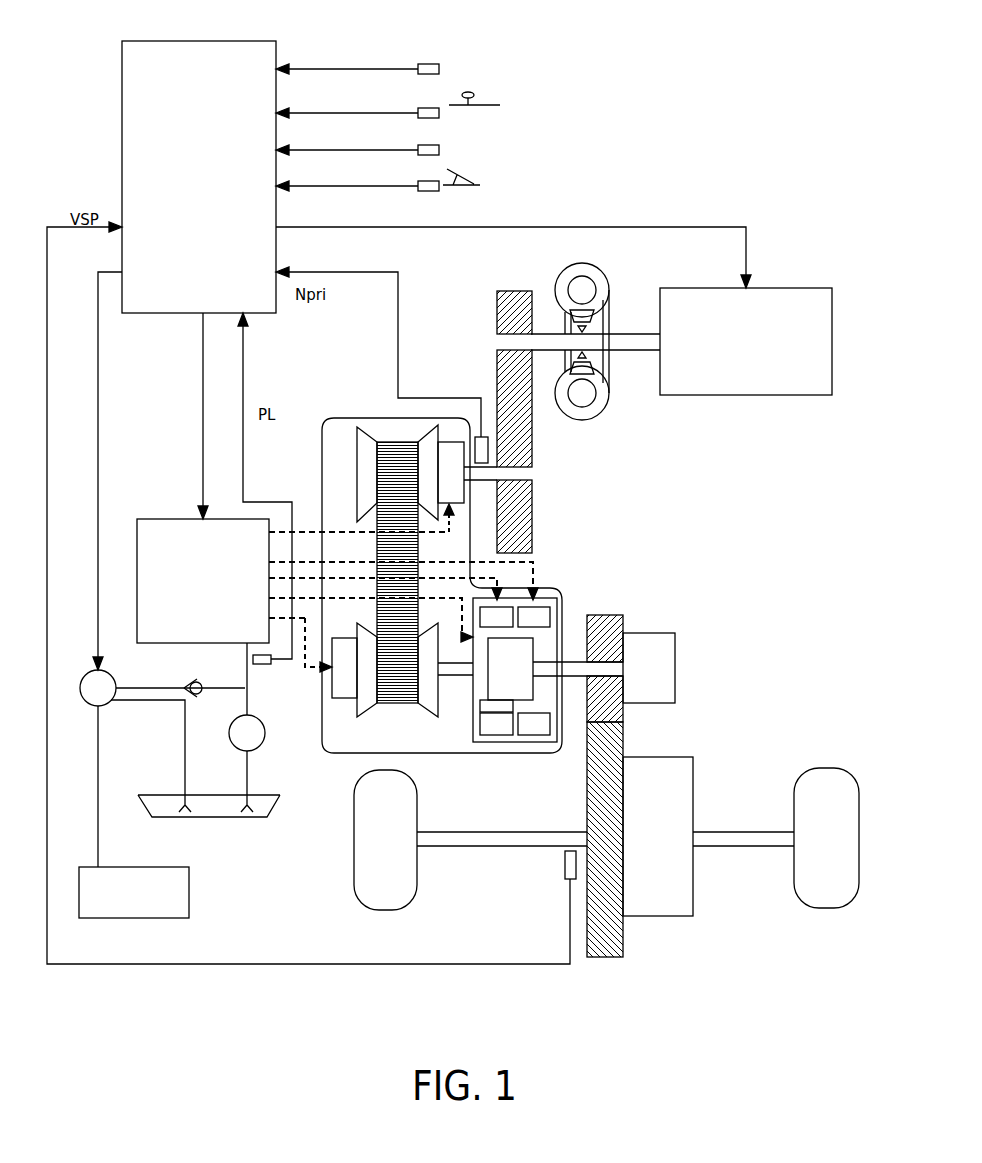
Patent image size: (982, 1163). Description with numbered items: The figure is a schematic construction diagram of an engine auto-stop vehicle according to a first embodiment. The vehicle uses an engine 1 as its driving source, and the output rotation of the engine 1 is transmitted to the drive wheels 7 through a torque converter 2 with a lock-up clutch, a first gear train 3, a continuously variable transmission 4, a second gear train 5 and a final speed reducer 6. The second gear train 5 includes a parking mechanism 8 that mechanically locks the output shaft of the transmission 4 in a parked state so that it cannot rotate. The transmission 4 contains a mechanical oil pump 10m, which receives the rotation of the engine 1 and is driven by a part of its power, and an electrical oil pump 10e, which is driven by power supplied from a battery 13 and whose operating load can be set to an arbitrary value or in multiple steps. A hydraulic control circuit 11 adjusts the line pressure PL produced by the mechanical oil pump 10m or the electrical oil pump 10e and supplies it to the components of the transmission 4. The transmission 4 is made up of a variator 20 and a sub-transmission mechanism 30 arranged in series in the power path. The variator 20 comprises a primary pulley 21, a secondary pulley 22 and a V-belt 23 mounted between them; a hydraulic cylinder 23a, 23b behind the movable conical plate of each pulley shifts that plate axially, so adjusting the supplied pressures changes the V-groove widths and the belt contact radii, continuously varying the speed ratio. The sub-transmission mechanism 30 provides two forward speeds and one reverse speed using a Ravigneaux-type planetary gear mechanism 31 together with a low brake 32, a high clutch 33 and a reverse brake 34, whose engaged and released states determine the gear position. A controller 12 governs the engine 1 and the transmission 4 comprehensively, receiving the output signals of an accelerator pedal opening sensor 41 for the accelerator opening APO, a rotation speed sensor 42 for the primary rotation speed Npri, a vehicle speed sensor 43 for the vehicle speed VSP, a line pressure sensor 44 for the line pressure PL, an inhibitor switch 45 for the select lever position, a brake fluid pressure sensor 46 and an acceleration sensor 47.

The engine 1 is at (820, 300).
The torque converter 2 is at (607, 292).
The first gear train 3 is at (517, 280).
The transmission 4 is at (375, 440).
The second gear train 5 is at (610, 968).
The final speed reducer 6 is at (658, 904).
The drive wheels 7 is at (387, 895).
The parking mechanism 8 is at (659, 660).
The electrical oil pump 10e is at (105, 708).
The mechanical oil pump 10m is at (263, 748).
The hydraulic control circuit 11 is at (160, 523).
The controller 12 is at (263, 50).
The battery 13 is at (180, 907).
The variator 20 is at (340, 448).
The primary pulley 21 is at (367, 470).
The secondary pulley 22 is at (367, 703).
The V-belt 23 is at (397, 440).
The hydraulic cylinder 23a is at (448, 455).
The hydraulic cylinder 23b is at (338, 690).
The sub-transmission mechanism 30 is at (540, 628).
The Ravigneaux-type planetary gear mechanism 31 is at (515, 665).
The low brake 32 is at (497, 617).
The high clutch 33 is at (490, 718).
The reverse brake 34 is at (530, 617).
The accelerator pedal opening sensor 41 is at (428, 191).
The rotation speed sensor 42 is at (483, 452).
The vehicle speed sensor 43 is at (566, 866).
The line pressure sensor 44 is at (265, 665).
The inhibitor switch 45 is at (430, 112).
The brake fluid pressure sensor 46 is at (425, 152).
The acceleration sensor 47 is at (431, 67).